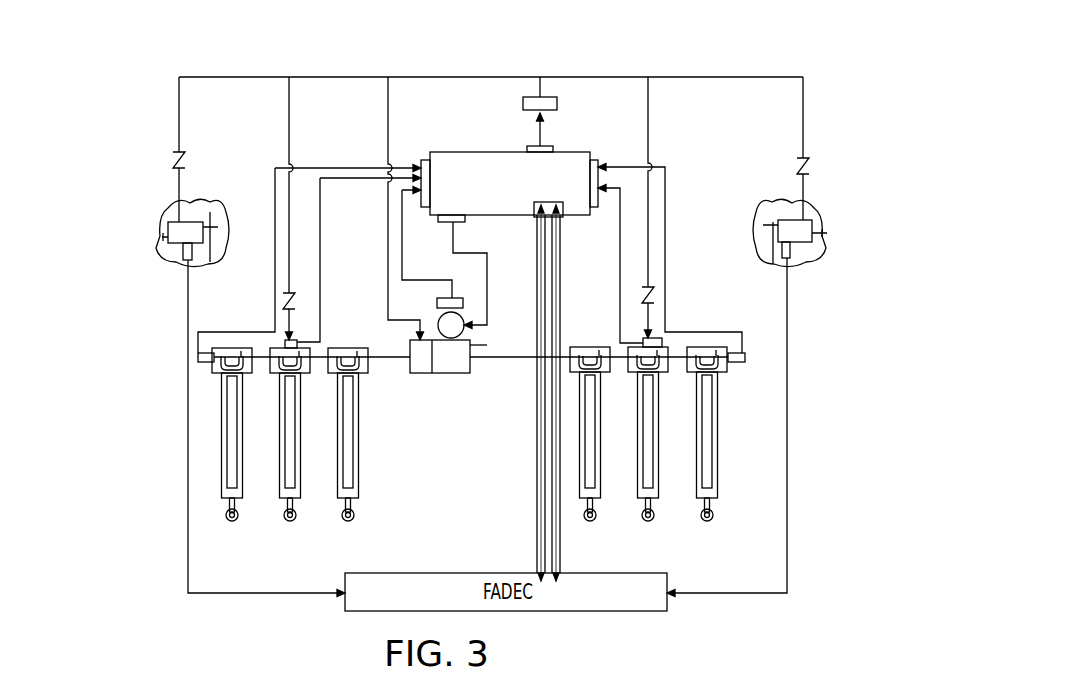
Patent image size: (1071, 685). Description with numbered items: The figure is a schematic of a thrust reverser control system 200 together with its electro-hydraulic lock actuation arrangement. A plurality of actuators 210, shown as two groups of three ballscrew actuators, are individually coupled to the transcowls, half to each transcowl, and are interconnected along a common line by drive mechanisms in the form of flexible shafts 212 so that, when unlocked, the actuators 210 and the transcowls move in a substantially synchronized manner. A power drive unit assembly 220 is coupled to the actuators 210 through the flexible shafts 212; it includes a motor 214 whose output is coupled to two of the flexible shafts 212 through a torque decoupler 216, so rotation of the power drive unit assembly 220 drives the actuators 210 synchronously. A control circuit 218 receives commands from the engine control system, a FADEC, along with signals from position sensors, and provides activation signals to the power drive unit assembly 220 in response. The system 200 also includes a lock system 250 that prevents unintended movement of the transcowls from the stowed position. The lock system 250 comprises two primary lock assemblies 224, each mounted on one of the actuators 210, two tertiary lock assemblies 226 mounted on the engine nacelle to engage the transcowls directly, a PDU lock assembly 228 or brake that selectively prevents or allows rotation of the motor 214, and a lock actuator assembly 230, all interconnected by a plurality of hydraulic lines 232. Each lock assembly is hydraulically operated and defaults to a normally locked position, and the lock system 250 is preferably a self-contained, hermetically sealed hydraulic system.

The thrust reverser control system 200 is at (165, 127).
The actuators 210 is at (367, 512).
The flexible shafts 212 is at (390, 359).
The motor 214 is at (440, 322).
The torque decoupler 216 is at (493, 308).
The control circuit 218 is at (456, 152).
The power drive unit (PDU) assembly 220 is at (465, 319).
The primary lock assemblies 224 is at (285, 342).
The tertiary lock assemblies 226 is at (196, 228).
The PDU lock assembly 228 is at (422, 372).
The lock actuator assembly 230 is at (558, 104).
The hydraulic lines 232 is at (458, 76).
The lock system 250 is at (605, 65).